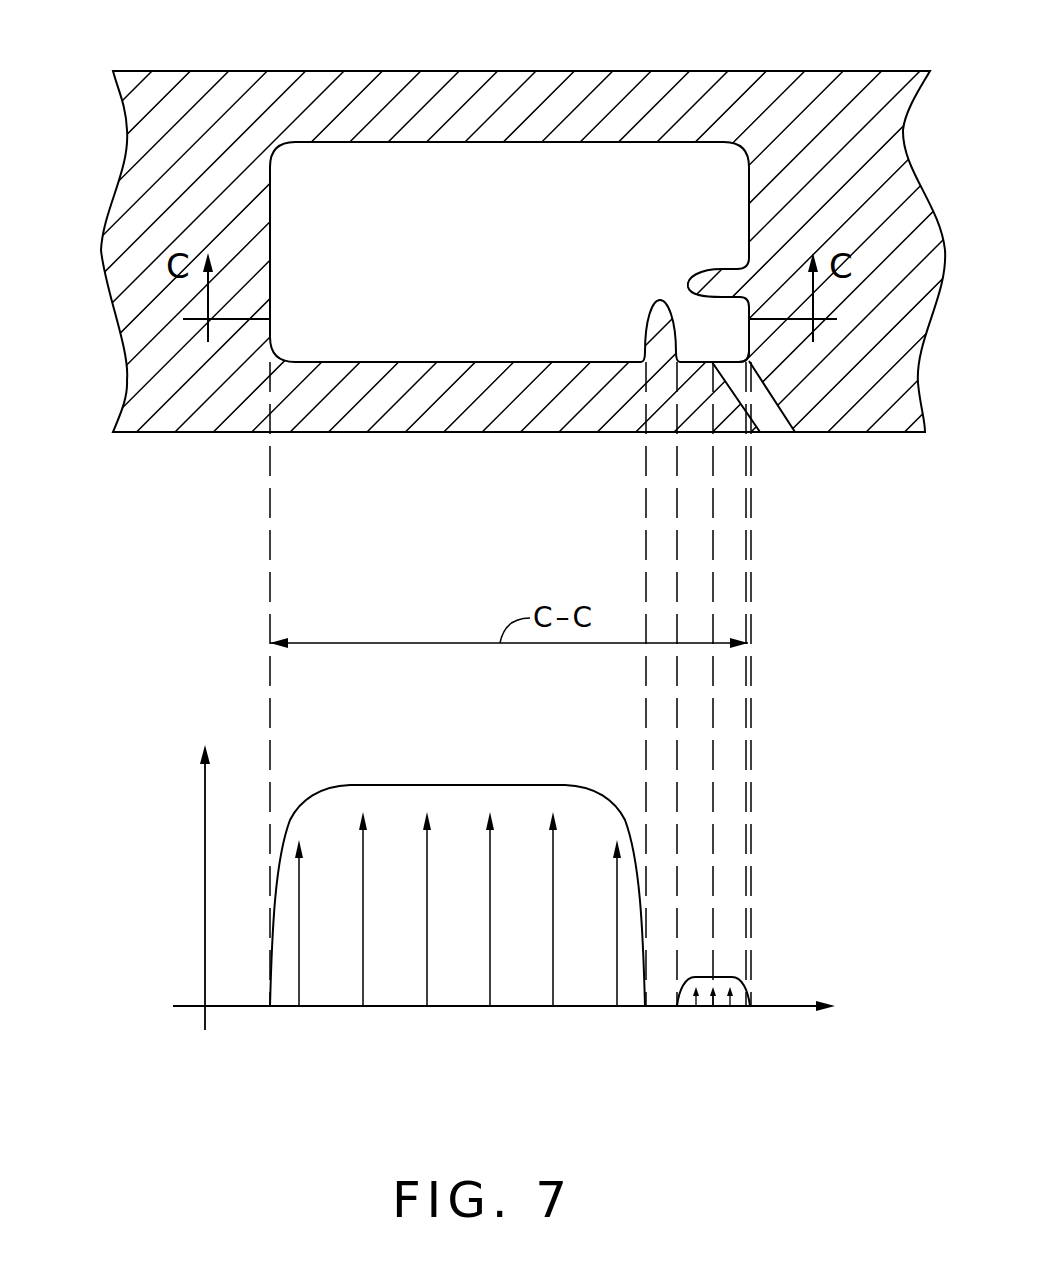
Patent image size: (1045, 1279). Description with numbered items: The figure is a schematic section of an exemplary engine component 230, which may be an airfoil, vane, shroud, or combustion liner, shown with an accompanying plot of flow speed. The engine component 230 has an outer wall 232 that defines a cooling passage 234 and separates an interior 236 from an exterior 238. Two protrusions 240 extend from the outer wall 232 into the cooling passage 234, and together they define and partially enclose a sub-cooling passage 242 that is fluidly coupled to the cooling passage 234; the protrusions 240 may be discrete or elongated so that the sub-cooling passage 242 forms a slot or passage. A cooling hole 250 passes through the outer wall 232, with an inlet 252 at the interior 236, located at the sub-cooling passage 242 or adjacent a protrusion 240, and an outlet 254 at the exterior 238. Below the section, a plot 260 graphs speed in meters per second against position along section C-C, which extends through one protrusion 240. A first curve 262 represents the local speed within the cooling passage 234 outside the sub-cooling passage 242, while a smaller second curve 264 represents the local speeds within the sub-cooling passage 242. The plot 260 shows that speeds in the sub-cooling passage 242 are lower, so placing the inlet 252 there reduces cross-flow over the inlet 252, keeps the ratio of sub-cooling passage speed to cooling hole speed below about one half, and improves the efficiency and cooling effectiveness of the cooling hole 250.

The engine component 230 is at (200, 52).
The outer wall 232 is at (370, 72).
The cooling passage 234 is at (495, 157).
The interior 236 is at (410, 243).
The exterior 238 is at (86, 357).
The protrusions 240 is at (727, 270).
The sub-cooling passage 242 is at (690, 315).
The cooling hole 250 is at (808, 412).
The inlet 252 is at (723, 363).
The outlet 254 is at (777, 436).
The plot 260 is at (253, 791).
The first curve 262 is at (385, 785).
The second curve 264 is at (727, 975).